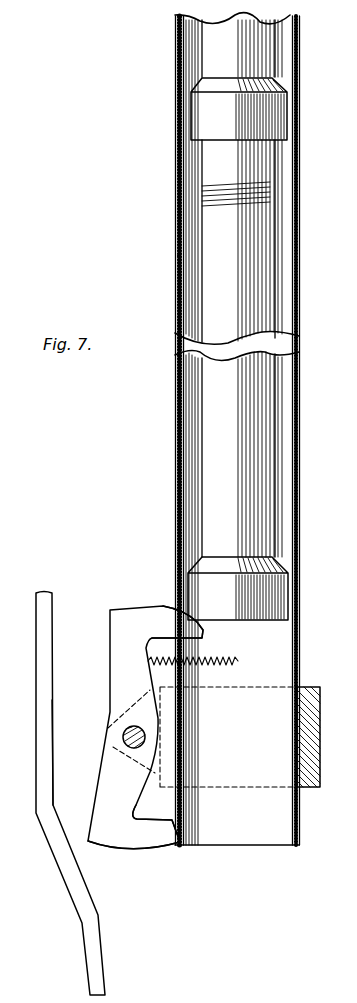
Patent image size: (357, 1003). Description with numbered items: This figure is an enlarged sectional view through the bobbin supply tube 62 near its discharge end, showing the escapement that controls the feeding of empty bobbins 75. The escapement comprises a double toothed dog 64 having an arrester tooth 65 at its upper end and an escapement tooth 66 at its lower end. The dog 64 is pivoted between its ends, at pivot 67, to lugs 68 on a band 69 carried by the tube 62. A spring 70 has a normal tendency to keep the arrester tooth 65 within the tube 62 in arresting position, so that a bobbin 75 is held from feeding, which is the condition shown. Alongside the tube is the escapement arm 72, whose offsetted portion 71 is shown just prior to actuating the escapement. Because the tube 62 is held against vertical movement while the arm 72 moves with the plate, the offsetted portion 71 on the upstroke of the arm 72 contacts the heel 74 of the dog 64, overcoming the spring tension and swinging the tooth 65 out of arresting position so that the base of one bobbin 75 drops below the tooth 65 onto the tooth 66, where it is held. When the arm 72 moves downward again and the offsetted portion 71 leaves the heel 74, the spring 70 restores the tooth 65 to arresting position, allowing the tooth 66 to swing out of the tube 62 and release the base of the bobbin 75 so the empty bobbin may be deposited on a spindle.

The supply tube 62 is at (300, 505).
The double toothed dog 64 is at (112, 696).
The arrester tooth 65 is at (170, 617).
The escapement tooth 66 is at (177, 843).
The pivot 67 is at (123, 736).
The lugs 68 is at (160, 778).
The band 69 is at (320, 730).
The spring 70 is at (218, 673).
The offsetted portion 71 is at (102, 948).
The escapement arm 72 is at (53, 758).
The heel 74 is at (110, 845).
The bobbin 75 is at (278, 95).